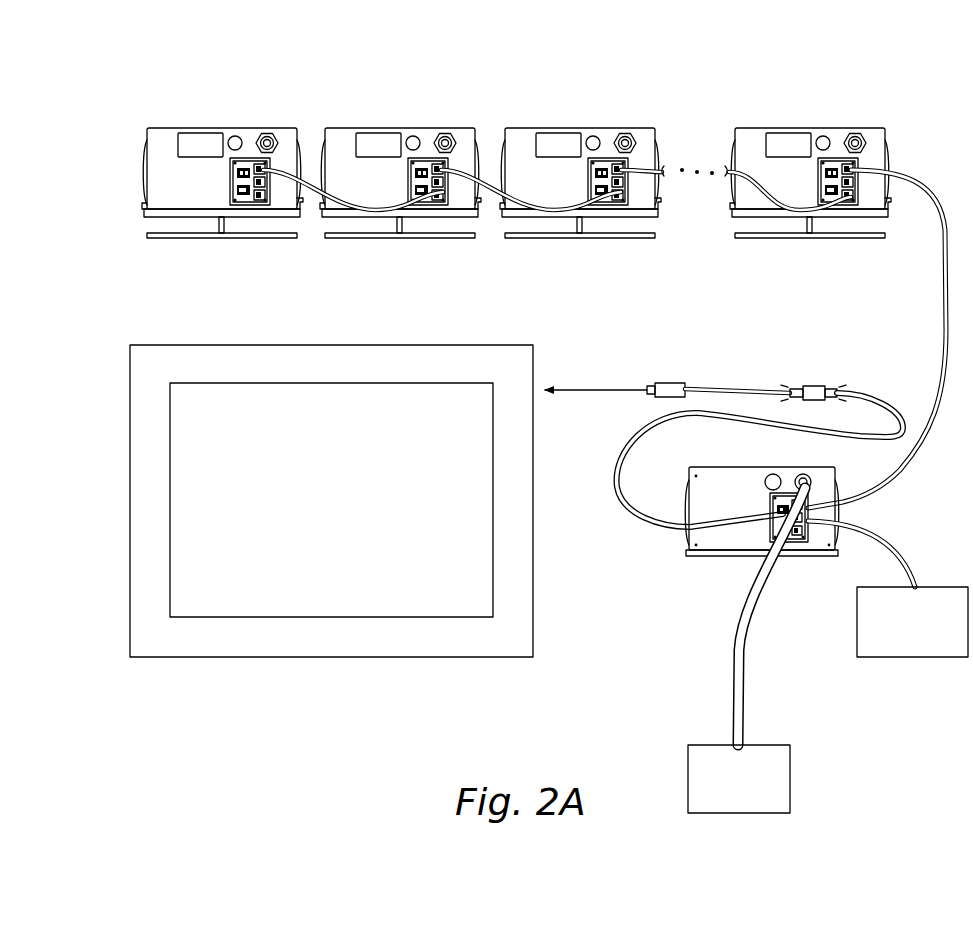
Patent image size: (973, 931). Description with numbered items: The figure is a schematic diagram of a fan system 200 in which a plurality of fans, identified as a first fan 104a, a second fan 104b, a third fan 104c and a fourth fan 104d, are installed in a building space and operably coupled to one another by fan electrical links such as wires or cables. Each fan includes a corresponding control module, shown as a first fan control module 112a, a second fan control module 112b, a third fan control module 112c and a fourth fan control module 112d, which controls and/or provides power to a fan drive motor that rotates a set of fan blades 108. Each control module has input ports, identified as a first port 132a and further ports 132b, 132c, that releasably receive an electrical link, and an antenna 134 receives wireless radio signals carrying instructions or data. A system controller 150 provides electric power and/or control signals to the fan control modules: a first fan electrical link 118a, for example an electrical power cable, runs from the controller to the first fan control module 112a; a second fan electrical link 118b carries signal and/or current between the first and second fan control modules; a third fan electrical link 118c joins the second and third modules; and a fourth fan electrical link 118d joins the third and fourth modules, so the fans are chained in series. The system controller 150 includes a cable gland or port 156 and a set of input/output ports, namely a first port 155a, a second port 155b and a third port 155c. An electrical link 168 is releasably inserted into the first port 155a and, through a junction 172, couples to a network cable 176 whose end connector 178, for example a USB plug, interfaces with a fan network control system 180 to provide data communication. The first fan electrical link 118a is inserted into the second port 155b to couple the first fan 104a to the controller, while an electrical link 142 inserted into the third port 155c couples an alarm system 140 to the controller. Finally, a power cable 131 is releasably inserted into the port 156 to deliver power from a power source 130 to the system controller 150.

The fan system 200 is at (92, 112).
The first fan 104a is at (863, 108).
The second fan 104b is at (625, 108).
The third fan 104c is at (447, 108).
The fourth fan 104d is at (269, 108).
The first fan control module 112a is at (795, 137).
The second fan control module 112b is at (567, 137).
The third fan control module 112c is at (389, 137).
The fourth fan control module 112d is at (216, 137).
The set of fan blades 108 is at (213, 240).
The first fan electrical link 118a is at (946, 325).
The second fan electrical link 118b is at (727, 180).
The third fan electrical link 118c is at (483, 216).
The fourth fan electrical link 118d is at (303, 216).
The first port 132a is at (883, 230).
The input port 132b is at (800, 150).
The input port 132c is at (889, 166).
The antenna 134 is at (890, 132).
The system controller 150 is at (665, 556).
The first port 155a is at (782, 517).
The second port 155b is at (772, 482).
The third port 155c is at (808, 541).
The cable gland or port 156 is at (812, 489).
The electrical link 168 is at (618, 505).
The junction 172 is at (813, 386).
The network cable 176 is at (743, 389).
The end connector 178 is at (686, 383).
The fan network control system 180 is at (335, 680).
The electrical link 142 is at (925, 576).
The alarm system 140 is at (913, 658).
The power cable 131 is at (746, 665).
The power source 130 is at (791, 777).